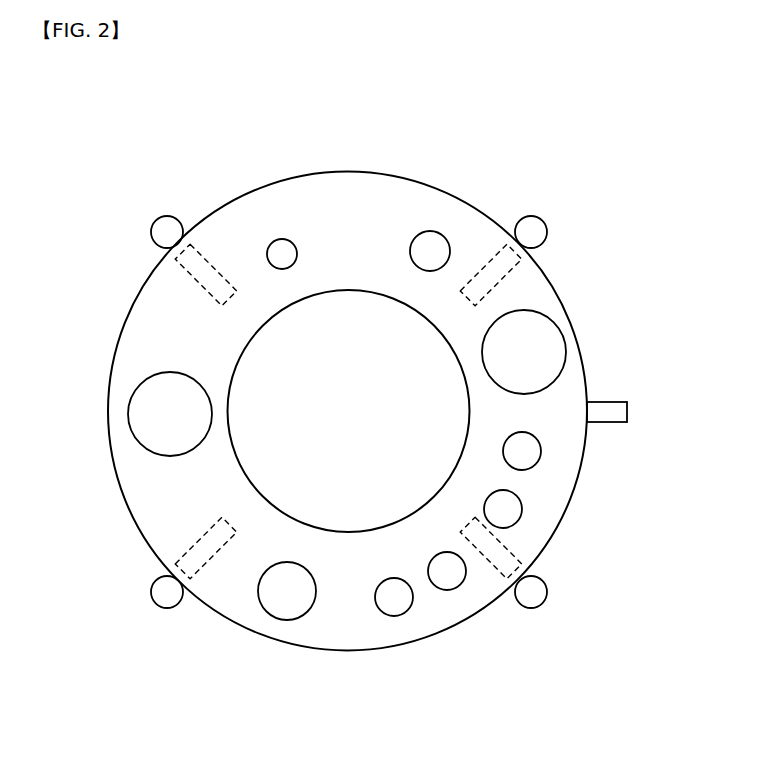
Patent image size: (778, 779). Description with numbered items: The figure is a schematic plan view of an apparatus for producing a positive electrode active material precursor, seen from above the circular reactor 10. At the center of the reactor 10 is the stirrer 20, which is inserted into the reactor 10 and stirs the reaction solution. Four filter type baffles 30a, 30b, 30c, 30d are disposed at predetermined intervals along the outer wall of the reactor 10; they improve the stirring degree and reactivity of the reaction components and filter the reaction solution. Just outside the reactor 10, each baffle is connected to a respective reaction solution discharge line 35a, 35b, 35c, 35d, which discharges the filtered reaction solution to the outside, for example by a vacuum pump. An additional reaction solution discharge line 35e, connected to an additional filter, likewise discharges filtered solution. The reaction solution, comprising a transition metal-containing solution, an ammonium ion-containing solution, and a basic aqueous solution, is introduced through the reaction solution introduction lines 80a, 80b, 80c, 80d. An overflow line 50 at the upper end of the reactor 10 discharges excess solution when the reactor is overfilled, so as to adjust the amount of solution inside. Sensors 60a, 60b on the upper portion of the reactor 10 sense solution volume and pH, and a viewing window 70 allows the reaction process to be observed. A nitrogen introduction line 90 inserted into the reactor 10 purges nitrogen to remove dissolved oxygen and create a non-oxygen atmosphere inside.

The reactor 10 is at (138, 345).
The stirrer 20 is at (348, 328).
The filter type baffle 30a is at (495, 272).
The filter type baffle 30b is at (200, 558).
The filter type baffle 30c is at (203, 272).
The filter type baffle 30d is at (493, 557).
The reaction solution discharge line 35a is at (531, 232).
The reaction solution discharge line 35b is at (167, 592).
The reaction solution discharge line 35c is at (167, 232).
The reaction solution discharge line 35d is at (531, 592).
The additional reaction solution discharge line 35e is at (170, 414).
The overflow line 50 is at (612, 412).
The sensor 60a is at (287, 591).
The sensor 60b is at (430, 251).
The viewing window 70 is at (525, 352).
The reaction solution introduction line 80a is at (394, 597).
The reaction solution introduction line 80b is at (447, 572).
The reaction solution introduction line 80c is at (503, 509).
The reaction solution introduction line 80d is at (522, 451).
The nitrogen introduction line 90 is at (283, 253).